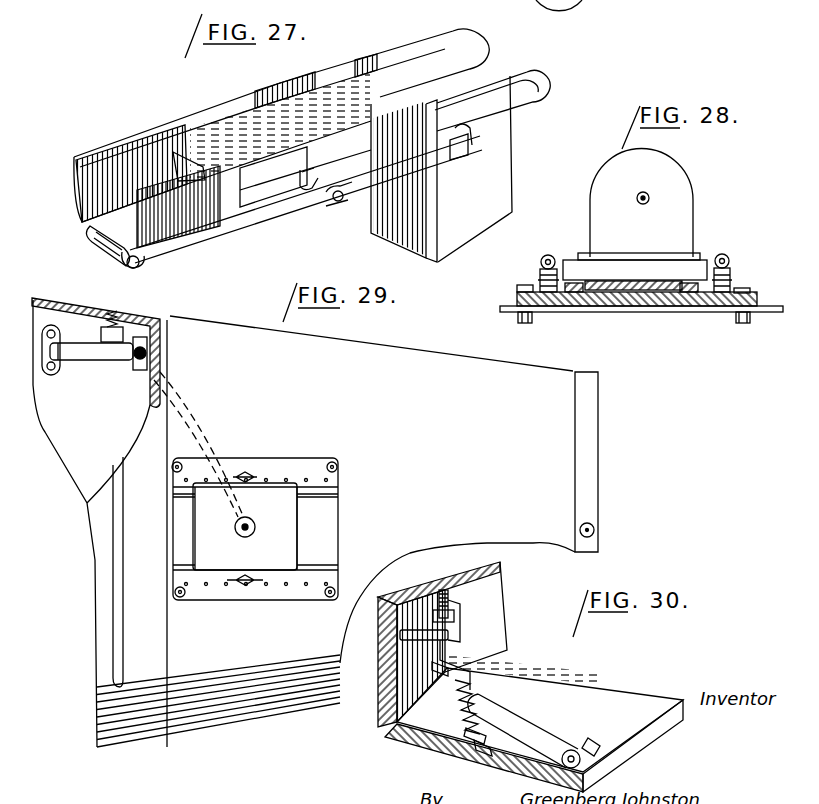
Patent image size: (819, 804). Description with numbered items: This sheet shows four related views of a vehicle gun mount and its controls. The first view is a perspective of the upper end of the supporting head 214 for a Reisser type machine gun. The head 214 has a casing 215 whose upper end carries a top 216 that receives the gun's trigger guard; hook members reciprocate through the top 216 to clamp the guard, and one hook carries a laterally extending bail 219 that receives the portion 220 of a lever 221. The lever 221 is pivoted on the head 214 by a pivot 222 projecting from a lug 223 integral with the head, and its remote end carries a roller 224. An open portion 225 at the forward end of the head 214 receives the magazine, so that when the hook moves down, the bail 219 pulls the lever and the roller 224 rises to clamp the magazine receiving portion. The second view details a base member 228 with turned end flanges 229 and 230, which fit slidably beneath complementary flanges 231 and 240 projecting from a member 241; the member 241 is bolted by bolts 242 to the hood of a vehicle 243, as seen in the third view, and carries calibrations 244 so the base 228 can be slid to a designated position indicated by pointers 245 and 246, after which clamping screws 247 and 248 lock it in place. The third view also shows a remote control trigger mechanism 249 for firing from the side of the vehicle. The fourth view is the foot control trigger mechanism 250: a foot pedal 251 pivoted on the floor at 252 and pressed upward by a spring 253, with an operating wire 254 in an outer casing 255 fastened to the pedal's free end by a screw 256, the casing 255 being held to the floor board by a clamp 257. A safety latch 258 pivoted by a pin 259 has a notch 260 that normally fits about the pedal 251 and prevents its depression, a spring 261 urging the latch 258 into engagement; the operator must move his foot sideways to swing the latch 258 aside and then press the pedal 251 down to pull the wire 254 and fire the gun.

In FIG. 27, the supporting head 214 is at (330, 55).
In FIG. 27, the casing 215 is at (436, 250).
In FIG. 27, the top 216 is at (447, 108).
In FIG. 27, the bail 219 is at (457, 160).
In FIG. 27, the lever portion 220 is at (442, 192).
In FIG. 27, the lever 221 is at (360, 214).
In FIG. 27, the pivot 222 is at (336, 200).
In FIG. 27, the lug 223 is at (306, 182).
In FIG. 27, the roller 224 is at (100, 247).
In FIG. 27, the open portion 225 is at (123, 221).
In FIG. 28, the base member 228 is at (673, 268).
In FIG. 28, the end flange 229 is at (692, 293).
In FIG. 28, the end flange 230 is at (572, 292).
In FIG. 28, the complementary flange 231 is at (677, 288).
In FIG. 28, the complementary flange 240 is at (598, 281).
In FIG. 28, the member 241 is at (727, 308).
In FIG. 29, the member 241 is at (310, 460).
In FIG. 29, the bolts 242 is at (338, 467).
In FIG. 29, the hood of a vehicle 243 is at (427, 362).
In FIG. 29, the calibrations 244 is at (277, 468).
In FIG. 29, the pointer 245 is at (236, 470).
In FIG. 29, the pointer 246 is at (243, 588).
In FIG. 28, the clamping screw 247 is at (730, 257).
In FIG. 28, the clamping screw 248 is at (548, 255).
In FIG. 29, the remote control trigger mechanism 249 is at (102, 356).
In FIG. 30, the foot control trigger mechanism 250 is at (545, 706).
In FIG. 30, the foot pedal 251 is at (551, 672).
In FIG. 30, the pivot 252 is at (593, 743).
In FIG. 30, the spring 253 is at (433, 737).
In FIG. 30, the operating wire 254 is at (453, 652).
In FIG. 30, the outer casing 255 is at (449, 607).
In FIG. 30, the screw 256 is at (430, 670).
In FIG. 30, the clamp 257 is at (452, 656).
In FIG. 29, the safety latch 258 is at (132, 335).
In FIG. 30, the safety latch 258 is at (458, 740).
In FIG. 30, the pin 259 is at (481, 757).
In FIG. 30, the notch 260 is at (513, 680).
In FIG. 29, the spring 261 is at (117, 313).
In FIG. 30, the spring 261 is at (388, 727).